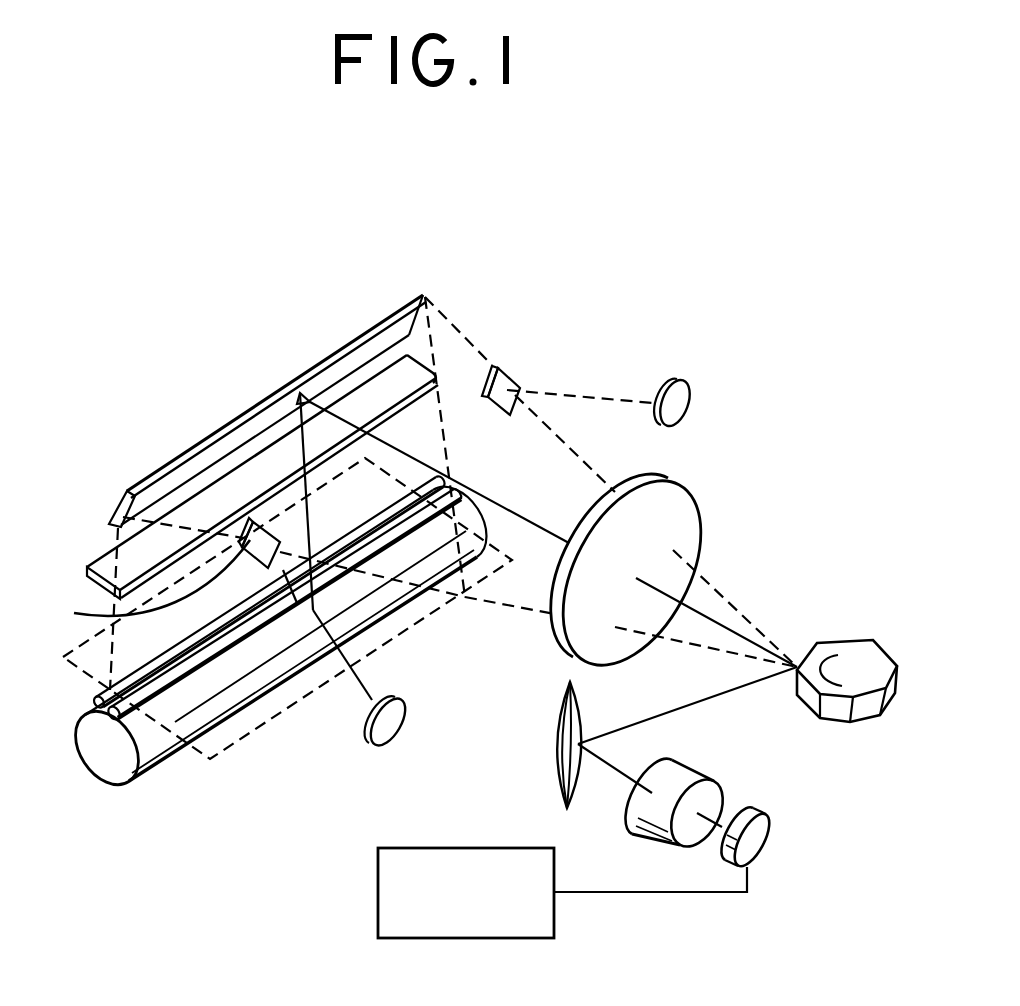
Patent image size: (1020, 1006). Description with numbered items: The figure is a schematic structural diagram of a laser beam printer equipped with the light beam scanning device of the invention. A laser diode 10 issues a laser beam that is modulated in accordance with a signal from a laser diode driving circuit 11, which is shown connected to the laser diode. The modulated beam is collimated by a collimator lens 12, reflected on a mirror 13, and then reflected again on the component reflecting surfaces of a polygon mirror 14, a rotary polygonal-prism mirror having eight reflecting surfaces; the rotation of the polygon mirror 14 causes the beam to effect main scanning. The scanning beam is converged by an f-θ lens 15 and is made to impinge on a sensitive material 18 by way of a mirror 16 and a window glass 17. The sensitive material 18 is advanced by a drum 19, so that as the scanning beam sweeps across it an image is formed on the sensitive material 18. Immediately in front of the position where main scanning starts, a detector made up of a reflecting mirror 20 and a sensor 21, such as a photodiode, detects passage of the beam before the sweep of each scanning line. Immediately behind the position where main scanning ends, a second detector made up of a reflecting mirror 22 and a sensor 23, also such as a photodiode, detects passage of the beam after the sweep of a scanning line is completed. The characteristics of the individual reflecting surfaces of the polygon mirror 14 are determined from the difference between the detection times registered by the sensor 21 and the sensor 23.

The laser diode 10 is at (752, 832).
The laser diode driving circuit 11 is at (378, 893).
The collimator lens 12 is at (680, 780).
The mirror 13 is at (562, 742).
The polygon mirror 14 is at (845, 648).
The f-θ lens 15 is at (680, 522).
The mirror 16 is at (178, 456).
The window glass 17 is at (362, 400).
The sensitive material 18 is at (228, 745).
The drum 19 is at (105, 763).
The reflecting mirror 20 is at (159, 574).
The sensor 21 is at (376, 744).
The reflecting mirror 22 is at (507, 372).
The sensor 23 is at (668, 380).